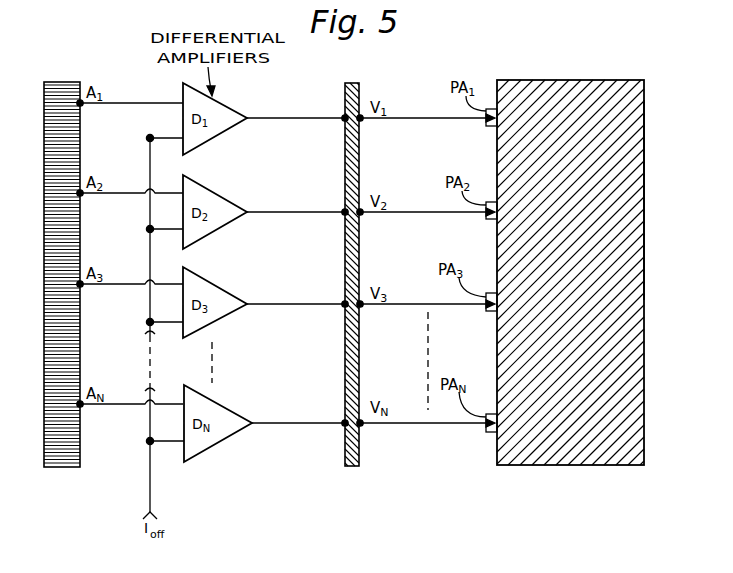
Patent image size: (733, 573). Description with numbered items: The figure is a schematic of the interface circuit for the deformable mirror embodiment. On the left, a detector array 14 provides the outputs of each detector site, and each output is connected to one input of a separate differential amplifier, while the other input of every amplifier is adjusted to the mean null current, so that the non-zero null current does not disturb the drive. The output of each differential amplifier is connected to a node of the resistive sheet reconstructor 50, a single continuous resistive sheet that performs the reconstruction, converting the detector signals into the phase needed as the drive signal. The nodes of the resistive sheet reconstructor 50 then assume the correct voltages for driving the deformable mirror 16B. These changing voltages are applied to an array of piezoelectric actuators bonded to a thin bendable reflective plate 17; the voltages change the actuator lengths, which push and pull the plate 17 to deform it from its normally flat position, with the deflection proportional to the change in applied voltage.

The detector array 14 is at (43, 447).
The resistive sheet reconstructor 50 is at (361, 452).
The deformable mirror 16B is at (566, 79).
The reflective plate 17 is at (645, 139).